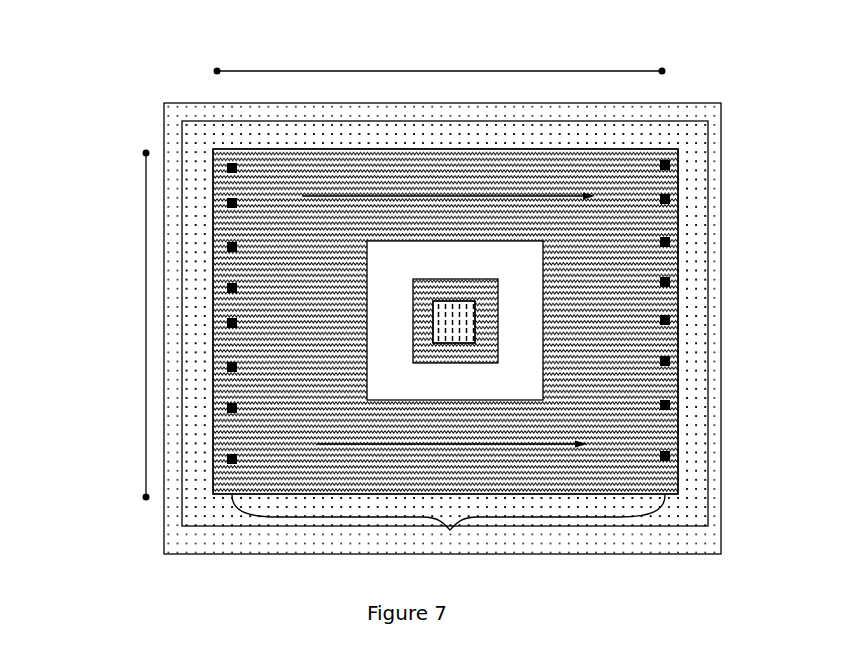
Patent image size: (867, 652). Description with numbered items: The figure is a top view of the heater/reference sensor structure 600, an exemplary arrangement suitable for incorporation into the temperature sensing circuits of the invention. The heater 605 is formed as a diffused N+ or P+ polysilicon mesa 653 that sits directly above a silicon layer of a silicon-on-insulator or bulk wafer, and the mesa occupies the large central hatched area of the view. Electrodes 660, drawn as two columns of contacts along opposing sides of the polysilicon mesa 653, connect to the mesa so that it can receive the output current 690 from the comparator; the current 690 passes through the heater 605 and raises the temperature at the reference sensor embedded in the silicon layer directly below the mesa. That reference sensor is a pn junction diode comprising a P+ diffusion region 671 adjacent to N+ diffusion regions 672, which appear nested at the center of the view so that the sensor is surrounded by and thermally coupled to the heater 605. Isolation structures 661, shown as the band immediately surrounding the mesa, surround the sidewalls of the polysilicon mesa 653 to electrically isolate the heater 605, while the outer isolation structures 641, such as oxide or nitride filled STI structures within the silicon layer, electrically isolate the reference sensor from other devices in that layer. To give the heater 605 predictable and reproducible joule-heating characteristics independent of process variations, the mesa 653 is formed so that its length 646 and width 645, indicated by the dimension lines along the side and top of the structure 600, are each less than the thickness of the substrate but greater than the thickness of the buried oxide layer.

The heater/reference sensor structure 600 is at (402, 307).
The heater 605 is at (450, 530).
The isolation structures 641 is at (720, 365).
The width 645 is at (497, 70).
The length 646 is at (147, 242).
The polysilicon mesa 653 is at (628, 168).
The electrodes 660 is at (671, 241).
The isolation structures 661 is at (708, 318).
The P+ diffusion region 671 is at (518, 367).
The N+ diffusion regions 672 is at (476, 323).
The output current 690 is at (363, 195).